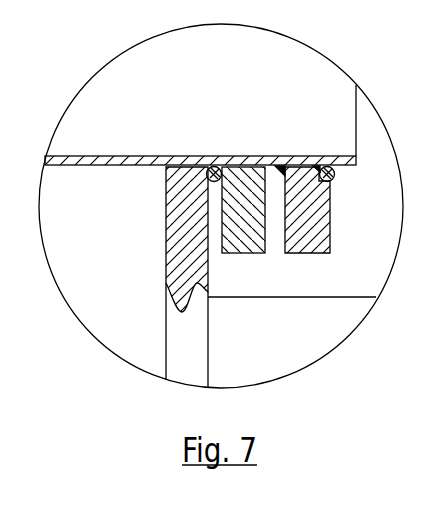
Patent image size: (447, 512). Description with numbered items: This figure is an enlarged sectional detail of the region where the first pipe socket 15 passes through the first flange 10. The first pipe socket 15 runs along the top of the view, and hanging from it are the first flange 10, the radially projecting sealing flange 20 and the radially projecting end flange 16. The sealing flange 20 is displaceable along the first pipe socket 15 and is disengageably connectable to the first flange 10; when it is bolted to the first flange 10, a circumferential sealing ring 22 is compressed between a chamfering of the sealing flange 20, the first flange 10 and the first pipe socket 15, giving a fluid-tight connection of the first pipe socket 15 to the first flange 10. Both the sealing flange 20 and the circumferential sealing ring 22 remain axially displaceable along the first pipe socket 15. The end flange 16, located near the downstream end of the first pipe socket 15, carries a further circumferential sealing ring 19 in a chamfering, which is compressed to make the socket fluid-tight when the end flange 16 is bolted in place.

The first flange 10 is at (182, 333).
The first pipe socket 15 is at (309, 68).
The end flange 16 is at (312, 231).
The circumferential sealing ring 19 is at (334, 177).
The sealing flange 20 is at (247, 243).
The circumferential sealing ring 22 is at (213, 163).